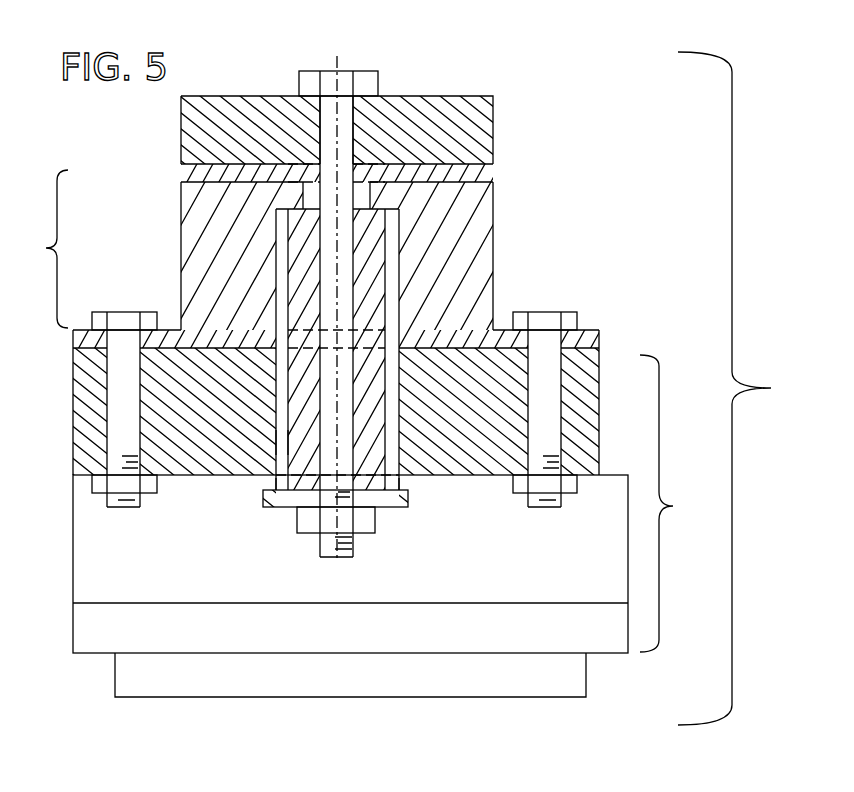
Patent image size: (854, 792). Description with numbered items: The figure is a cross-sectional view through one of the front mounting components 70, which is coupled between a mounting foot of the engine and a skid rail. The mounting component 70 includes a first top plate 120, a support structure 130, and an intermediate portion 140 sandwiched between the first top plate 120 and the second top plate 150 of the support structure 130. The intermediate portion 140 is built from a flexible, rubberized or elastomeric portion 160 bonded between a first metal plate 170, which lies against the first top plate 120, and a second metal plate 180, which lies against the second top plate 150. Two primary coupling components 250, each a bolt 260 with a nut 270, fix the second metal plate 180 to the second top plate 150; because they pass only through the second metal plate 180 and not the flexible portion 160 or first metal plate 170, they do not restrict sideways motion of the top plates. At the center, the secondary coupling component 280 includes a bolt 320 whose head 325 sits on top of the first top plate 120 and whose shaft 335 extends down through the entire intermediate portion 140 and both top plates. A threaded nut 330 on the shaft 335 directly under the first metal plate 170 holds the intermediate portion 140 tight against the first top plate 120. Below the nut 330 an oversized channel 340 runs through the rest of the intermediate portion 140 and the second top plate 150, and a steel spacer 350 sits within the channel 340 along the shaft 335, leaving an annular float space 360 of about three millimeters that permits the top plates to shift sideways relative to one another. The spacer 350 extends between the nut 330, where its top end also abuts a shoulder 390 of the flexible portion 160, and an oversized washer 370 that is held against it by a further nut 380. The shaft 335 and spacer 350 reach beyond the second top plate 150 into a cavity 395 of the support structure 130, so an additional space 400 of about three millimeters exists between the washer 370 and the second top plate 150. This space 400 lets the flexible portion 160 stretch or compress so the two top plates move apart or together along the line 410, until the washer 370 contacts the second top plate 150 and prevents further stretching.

The front mounting component 70 is at (745, 388).
The first top plate 120 is at (496, 126).
The support structure 130 is at (398, 526).
The intermediate portion 140 is at (36, 249).
The second top plate 150 is at (603, 405).
The flexible portion 160 is at (496, 264).
The first metal plate 170 is at (462, 177).
The second metal plate 180 is at (603, 328).
The primary coupling component 250 is at (88, 434).
The bolt 260 is at (125, 312).
The nut 270 is at (146, 497).
The secondary coupling component 280 is at (304, 135).
The bolt 320 is at (357, 127).
The head 325 is at (391, 70).
The threaded nut 330 is at (303, 192).
The shaft 335 is at (318, 157).
The oversized hole or channel 340 is at (270, 244).
The spacer 350 is at (280, 288).
The annular float space 360 is at (312, 442).
The oversized washer 370 is at (263, 498).
The further nut 380 is at (377, 518).
The shoulder 390 is at (376, 204).
The cavity 395 is at (282, 580).
The additional space 400 is at (408, 482).
The line 410 is at (337, 62).